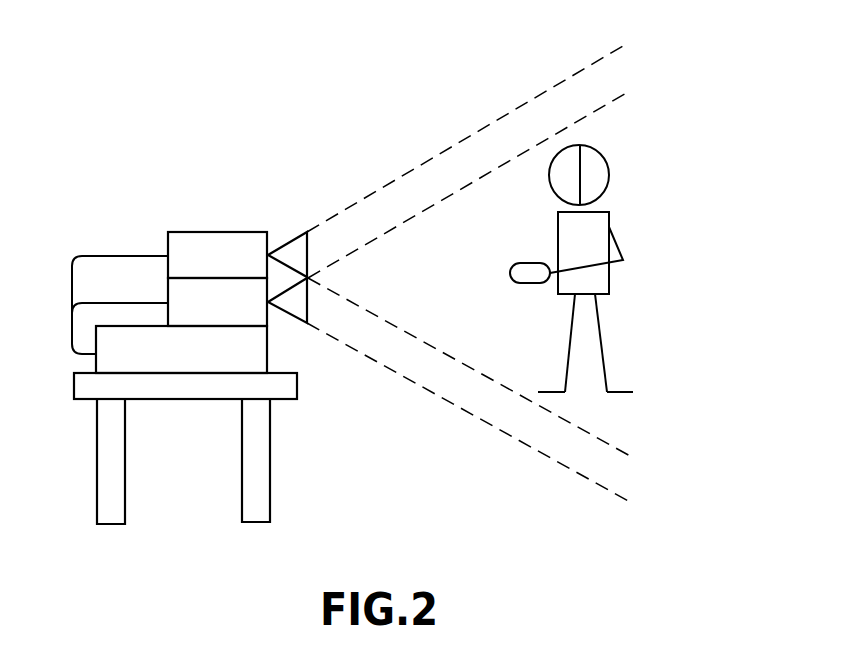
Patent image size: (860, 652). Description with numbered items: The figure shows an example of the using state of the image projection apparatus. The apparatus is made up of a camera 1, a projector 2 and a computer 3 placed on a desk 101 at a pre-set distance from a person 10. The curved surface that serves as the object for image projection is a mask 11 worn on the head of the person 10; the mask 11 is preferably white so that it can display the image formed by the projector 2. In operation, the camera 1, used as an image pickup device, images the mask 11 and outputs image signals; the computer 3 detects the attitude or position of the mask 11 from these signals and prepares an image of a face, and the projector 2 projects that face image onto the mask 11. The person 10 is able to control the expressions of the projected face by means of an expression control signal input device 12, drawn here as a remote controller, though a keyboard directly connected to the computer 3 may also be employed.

The camera 1 is at (195, 232).
The projector 2 is at (260, 317).
The computer 3 is at (108, 360).
The desk 101 is at (260, 458).
The person 10 is at (578, 257).
The mask 11 is at (565, 187).
The expression control signal input device 12 is at (518, 272).